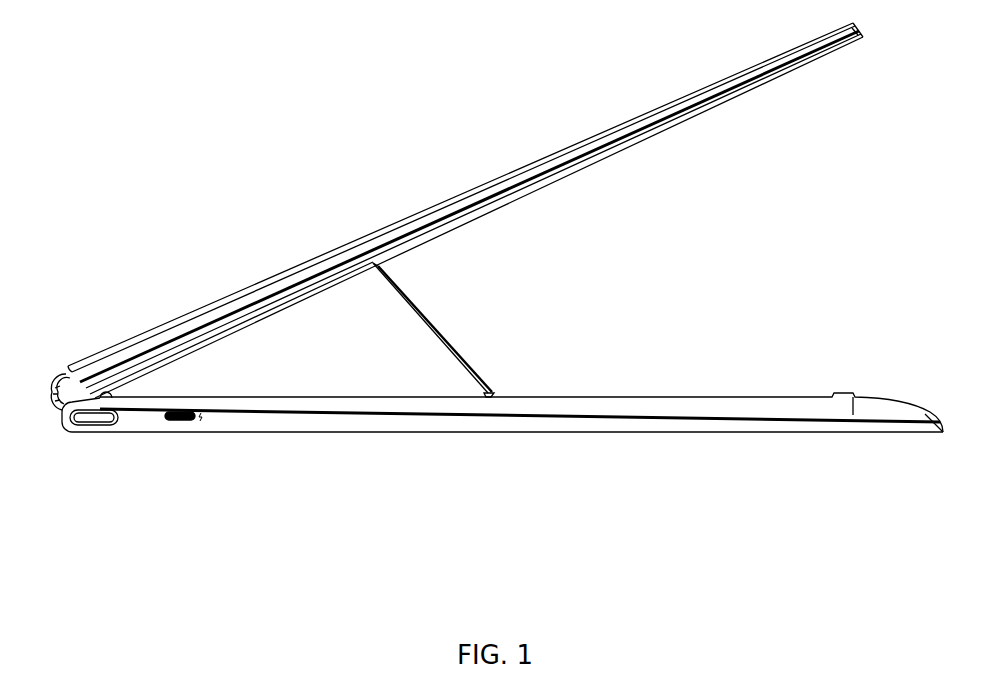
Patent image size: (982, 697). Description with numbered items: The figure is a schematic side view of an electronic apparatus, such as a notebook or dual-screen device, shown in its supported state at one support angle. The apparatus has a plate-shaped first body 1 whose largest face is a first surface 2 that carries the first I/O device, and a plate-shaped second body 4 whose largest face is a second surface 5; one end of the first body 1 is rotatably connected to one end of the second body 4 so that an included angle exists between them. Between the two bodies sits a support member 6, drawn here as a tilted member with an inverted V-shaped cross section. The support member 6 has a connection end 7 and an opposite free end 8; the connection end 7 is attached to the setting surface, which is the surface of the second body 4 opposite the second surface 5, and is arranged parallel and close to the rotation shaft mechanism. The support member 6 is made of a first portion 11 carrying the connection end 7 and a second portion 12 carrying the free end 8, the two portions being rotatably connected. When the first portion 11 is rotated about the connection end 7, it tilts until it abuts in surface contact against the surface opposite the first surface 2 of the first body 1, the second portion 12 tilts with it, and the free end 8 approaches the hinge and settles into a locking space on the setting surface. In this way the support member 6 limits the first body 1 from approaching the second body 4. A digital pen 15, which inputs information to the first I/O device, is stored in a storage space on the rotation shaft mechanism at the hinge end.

The first body 1 is at (483, 296).
The first surface 2 is at (578, 141).
The second body 4 is at (502, 401).
The second surface 5 is at (679, 438).
The support member 6 is at (311, 415).
The connection end 7 is at (129, 454).
The free end 8 is at (488, 401).
The first portion 11 is at (243, 336).
The second portion 12 is at (444, 356).
The digital pen 15 is at (55, 384).